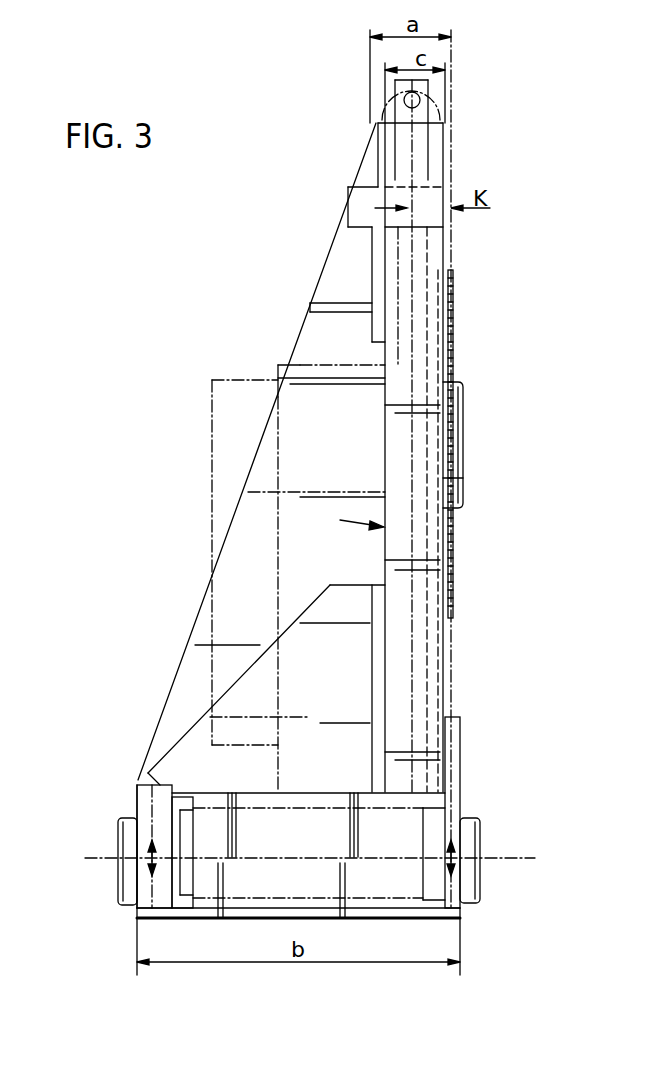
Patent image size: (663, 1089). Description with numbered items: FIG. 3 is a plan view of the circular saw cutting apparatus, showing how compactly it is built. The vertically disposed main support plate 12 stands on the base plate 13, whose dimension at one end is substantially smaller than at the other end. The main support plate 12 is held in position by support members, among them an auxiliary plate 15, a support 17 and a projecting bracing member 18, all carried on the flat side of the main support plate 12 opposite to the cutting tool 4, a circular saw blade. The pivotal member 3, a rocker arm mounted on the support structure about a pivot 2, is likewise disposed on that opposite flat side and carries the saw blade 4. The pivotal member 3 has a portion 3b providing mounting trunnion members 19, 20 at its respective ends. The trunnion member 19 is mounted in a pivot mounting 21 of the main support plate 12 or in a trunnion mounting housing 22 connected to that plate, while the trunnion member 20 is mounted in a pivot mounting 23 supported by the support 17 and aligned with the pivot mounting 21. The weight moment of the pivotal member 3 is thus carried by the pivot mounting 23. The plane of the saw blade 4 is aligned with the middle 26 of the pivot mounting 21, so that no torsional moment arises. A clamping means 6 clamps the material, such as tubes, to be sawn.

The pivot 2 is at (487, 860).
The pivotal member 3 is at (297, 428).
The portion of the pivotal member 3b is at (337, 800).
The cutting tool 4 is at (452, 362).
The clamping means 6 is at (353, 516).
The main support plate 12 is at (440, 648).
The base plate 13 is at (333, 260).
The auxiliary plate 15 is at (416, 232).
The support 17 is at (145, 803).
The bracing member 18 is at (200, 738).
The mounting trunnion member 19 is at (478, 900).
The mounting trunnion member 20 is at (125, 887).
The pivot mounting 21 is at (445, 898).
The trunnion mounting housing 22 is at (452, 733).
The pivot mounting 23 is at (150, 858).
The middle of the pivot mounting 26 is at (453, 862).